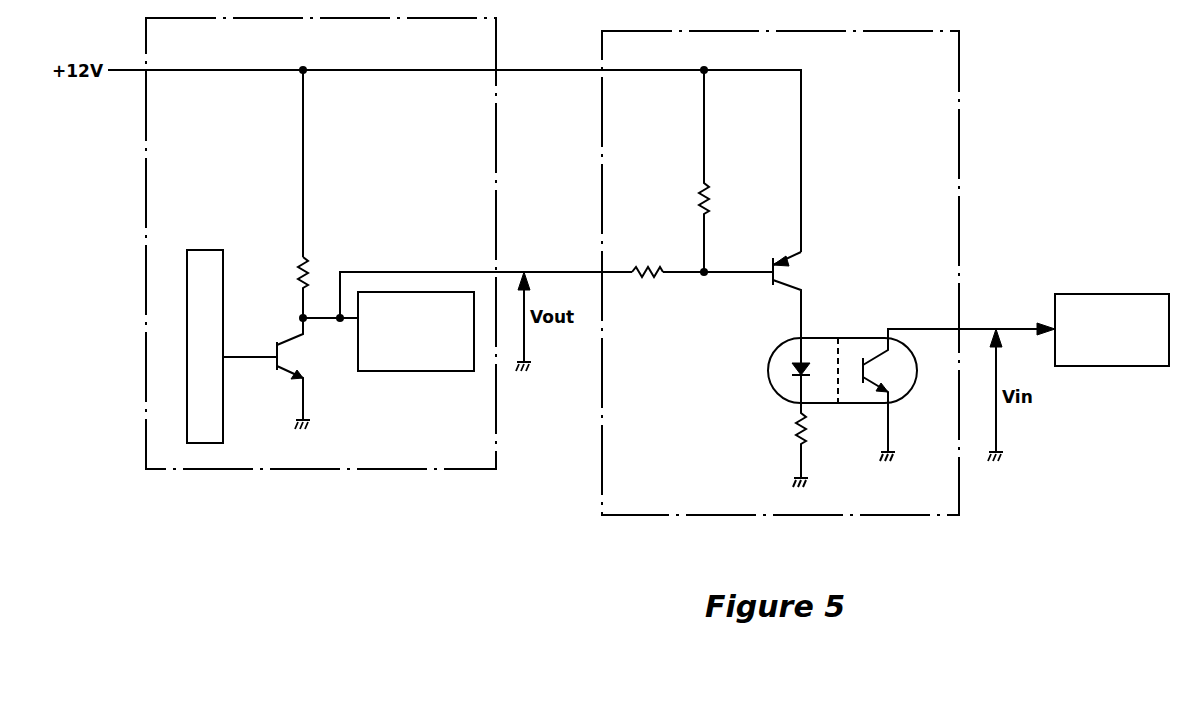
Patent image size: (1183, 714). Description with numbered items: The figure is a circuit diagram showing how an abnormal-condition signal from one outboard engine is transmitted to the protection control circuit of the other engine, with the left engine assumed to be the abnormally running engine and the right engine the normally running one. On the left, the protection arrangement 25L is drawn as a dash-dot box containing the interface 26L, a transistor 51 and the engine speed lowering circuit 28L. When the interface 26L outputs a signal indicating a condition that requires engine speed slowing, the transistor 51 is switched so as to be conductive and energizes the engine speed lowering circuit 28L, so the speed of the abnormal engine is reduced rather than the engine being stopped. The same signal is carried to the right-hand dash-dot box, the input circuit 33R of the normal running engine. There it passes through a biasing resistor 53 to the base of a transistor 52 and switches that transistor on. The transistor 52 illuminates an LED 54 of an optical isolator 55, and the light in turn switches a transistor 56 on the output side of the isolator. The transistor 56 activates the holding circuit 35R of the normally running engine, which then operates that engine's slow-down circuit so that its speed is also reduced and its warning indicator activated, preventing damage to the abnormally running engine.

The protection arrangement 25L is at (283, 469).
The interface 26L is at (205, 250).
The transistor 51 is at (291, 345).
The engine speed lowering circuit 28L is at (417, 371).
The input circuit 33R is at (725, 515).
The biasing resistor 53 is at (658, 268).
The transistor 52 is at (800, 283).
The LED 54 is at (790, 365).
The optical isolator 55 is at (796, 420).
The transistor 56 is at (866, 358).
The holding circuit 35R is at (1093, 294).